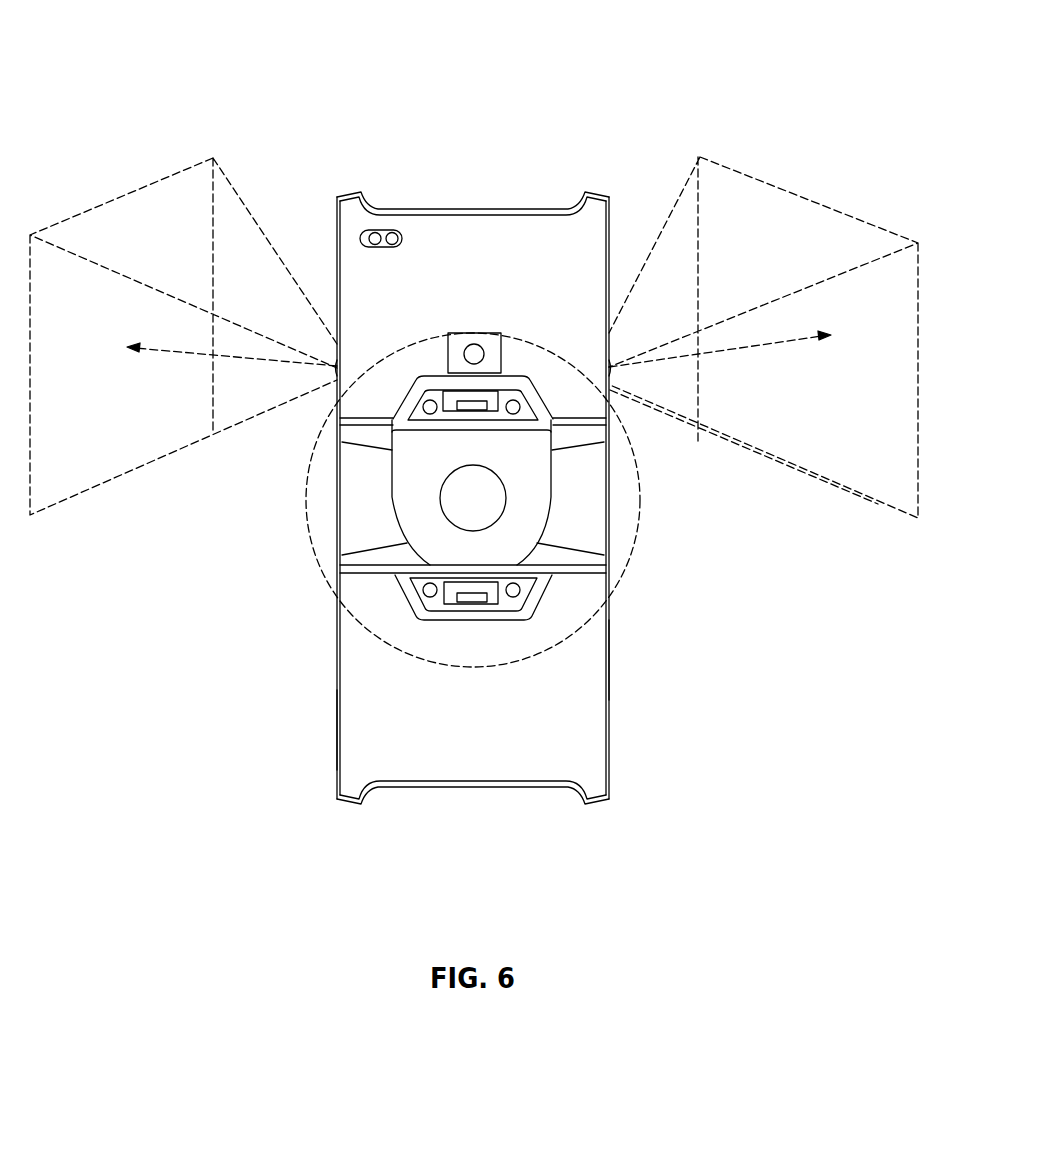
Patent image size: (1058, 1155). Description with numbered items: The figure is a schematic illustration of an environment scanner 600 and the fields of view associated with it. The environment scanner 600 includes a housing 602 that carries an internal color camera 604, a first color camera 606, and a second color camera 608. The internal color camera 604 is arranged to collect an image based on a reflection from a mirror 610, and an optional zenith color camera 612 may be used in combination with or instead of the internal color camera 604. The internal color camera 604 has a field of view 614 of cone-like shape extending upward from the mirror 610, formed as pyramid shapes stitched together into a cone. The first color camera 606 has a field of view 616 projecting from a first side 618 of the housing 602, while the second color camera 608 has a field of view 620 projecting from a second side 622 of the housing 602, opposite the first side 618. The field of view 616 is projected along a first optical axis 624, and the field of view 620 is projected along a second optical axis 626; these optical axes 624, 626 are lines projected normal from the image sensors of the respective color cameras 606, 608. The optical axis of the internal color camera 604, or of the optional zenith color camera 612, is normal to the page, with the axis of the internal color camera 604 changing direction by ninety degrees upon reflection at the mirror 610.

The environment scanner 600 is at (138, 48).
The housing 602 is at (600, 740).
The internal color camera 604 is at (420, 597).
The first color camera 606 is at (608, 367).
The second color camera 608 is at (338, 369).
The mirror 610 is at (542, 486).
The zenith color camera 612 is at (477, 333).
The field of view 614 is at (620, 543).
The field of view 616 is at (800, 455).
The first side 618 is at (612, 664).
The field of view 620 is at (336, 730).
The second side 622 is at (92, 474).
The first optical axis 624 is at (772, 345).
The second optical axis 626 is at (170, 355).